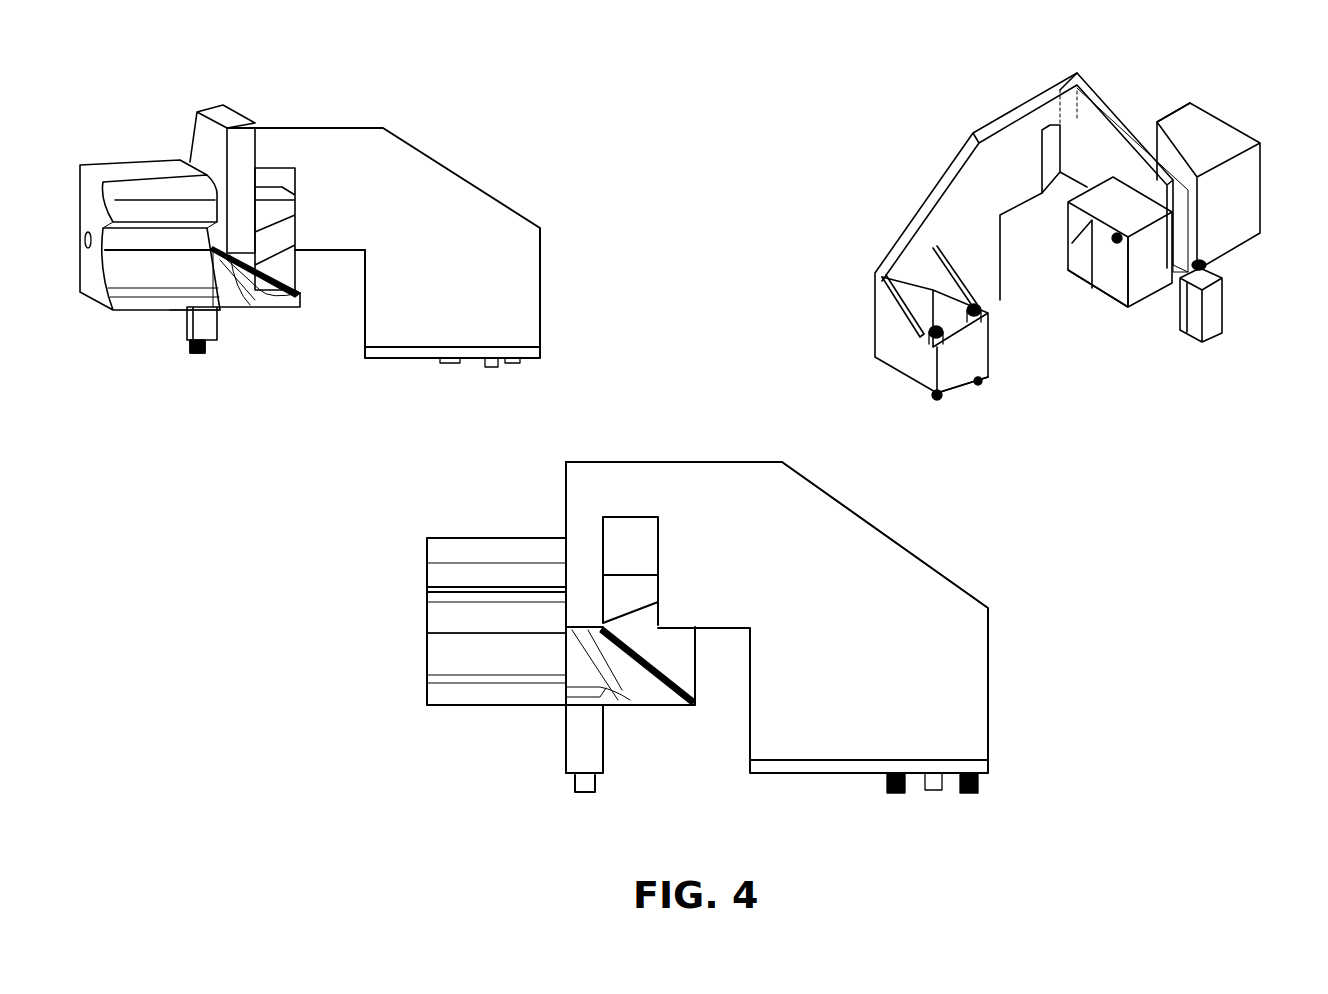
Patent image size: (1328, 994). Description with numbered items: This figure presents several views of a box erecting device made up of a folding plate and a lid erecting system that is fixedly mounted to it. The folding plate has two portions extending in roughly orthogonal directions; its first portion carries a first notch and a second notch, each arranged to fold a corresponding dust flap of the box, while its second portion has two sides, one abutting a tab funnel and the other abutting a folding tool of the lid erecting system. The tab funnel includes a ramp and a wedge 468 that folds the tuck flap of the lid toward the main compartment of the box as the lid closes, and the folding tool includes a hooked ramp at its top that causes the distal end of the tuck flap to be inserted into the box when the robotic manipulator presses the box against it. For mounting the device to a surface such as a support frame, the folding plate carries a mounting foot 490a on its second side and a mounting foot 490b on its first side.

The wedge 468 is at (296, 252).
The mounting foot 490a is at (975, 363).
The mounting foot 490b is at (1195, 320).